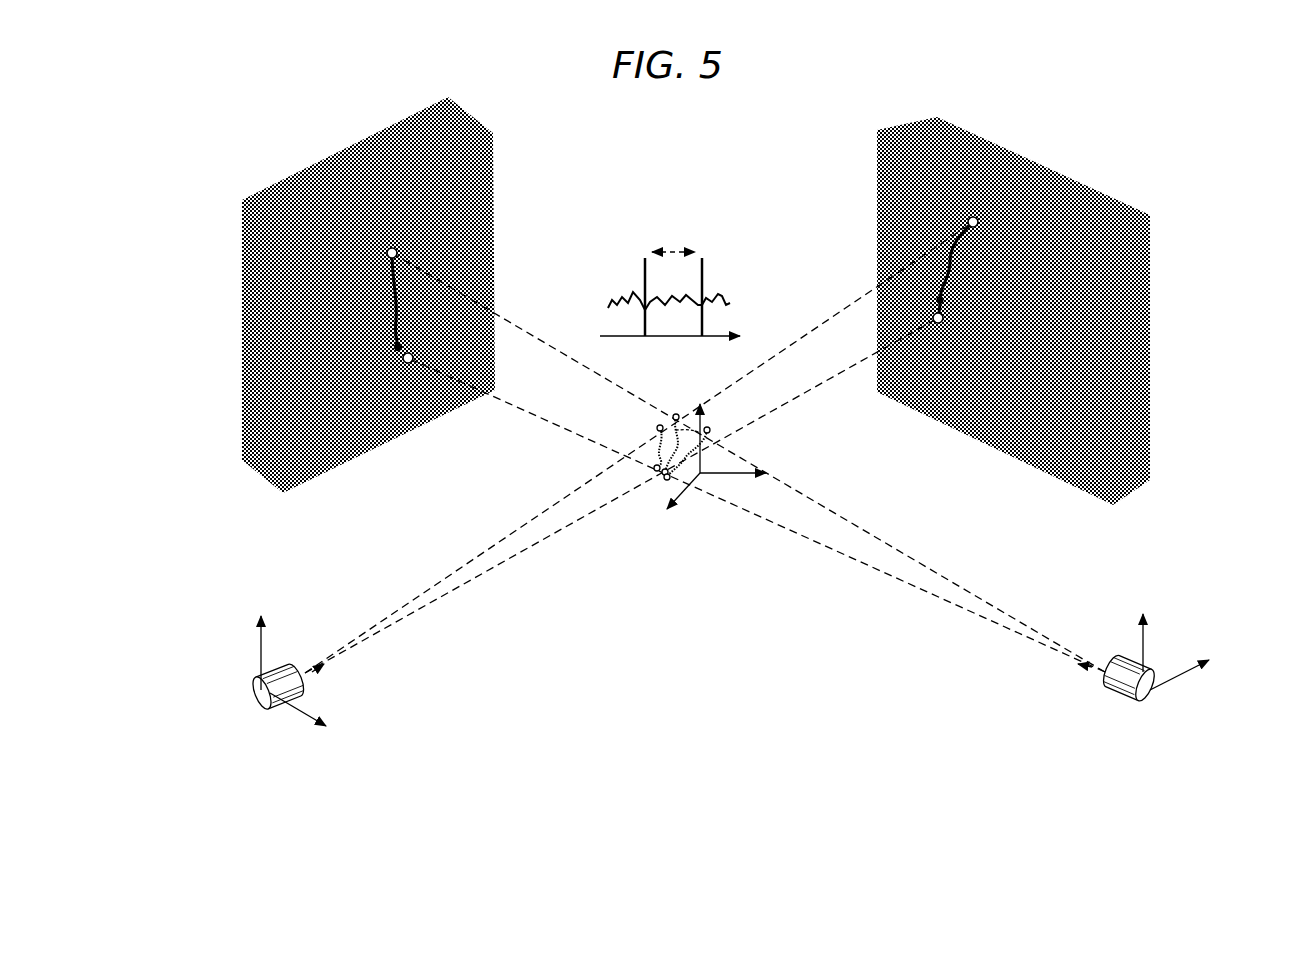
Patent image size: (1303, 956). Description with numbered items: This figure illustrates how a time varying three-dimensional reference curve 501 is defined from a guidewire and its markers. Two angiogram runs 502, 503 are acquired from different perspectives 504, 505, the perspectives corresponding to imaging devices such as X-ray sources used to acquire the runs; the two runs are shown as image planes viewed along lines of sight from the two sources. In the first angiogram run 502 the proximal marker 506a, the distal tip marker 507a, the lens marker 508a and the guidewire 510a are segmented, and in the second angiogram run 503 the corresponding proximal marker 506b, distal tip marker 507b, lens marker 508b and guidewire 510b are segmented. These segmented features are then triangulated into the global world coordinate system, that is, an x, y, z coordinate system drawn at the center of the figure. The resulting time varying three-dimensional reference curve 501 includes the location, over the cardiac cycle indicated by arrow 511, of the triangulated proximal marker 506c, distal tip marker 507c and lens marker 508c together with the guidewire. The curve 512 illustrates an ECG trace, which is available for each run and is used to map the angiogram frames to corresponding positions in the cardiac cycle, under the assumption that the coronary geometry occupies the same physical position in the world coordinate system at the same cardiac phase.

The time varying 3D reference curve 501 is at (638, 497).
The angiogram run 502 is at (317, 153).
The angiogram run 503 is at (1057, 163).
The perspective 504 is at (250, 698).
The perspective 505 is at (1155, 698).
The proximal marker 506a is at (387, 253).
The proximal marker 506b is at (978, 222).
The proximal marker 506c is at (703, 452).
The distal tip marker 507a is at (403, 359).
The distal tip marker 507b is at (943, 319).
The distal tip marker 507c is at (668, 480).
The lens marker 508a is at (395, 347).
The lens marker 508b is at (943, 300).
The lens marker 508c is at (675, 475).
The guidewire 510a is at (392, 300).
The guidewire 510b is at (953, 262).
The arrow 511 is at (665, 447).
The ECG trace curve 512 is at (727, 283).